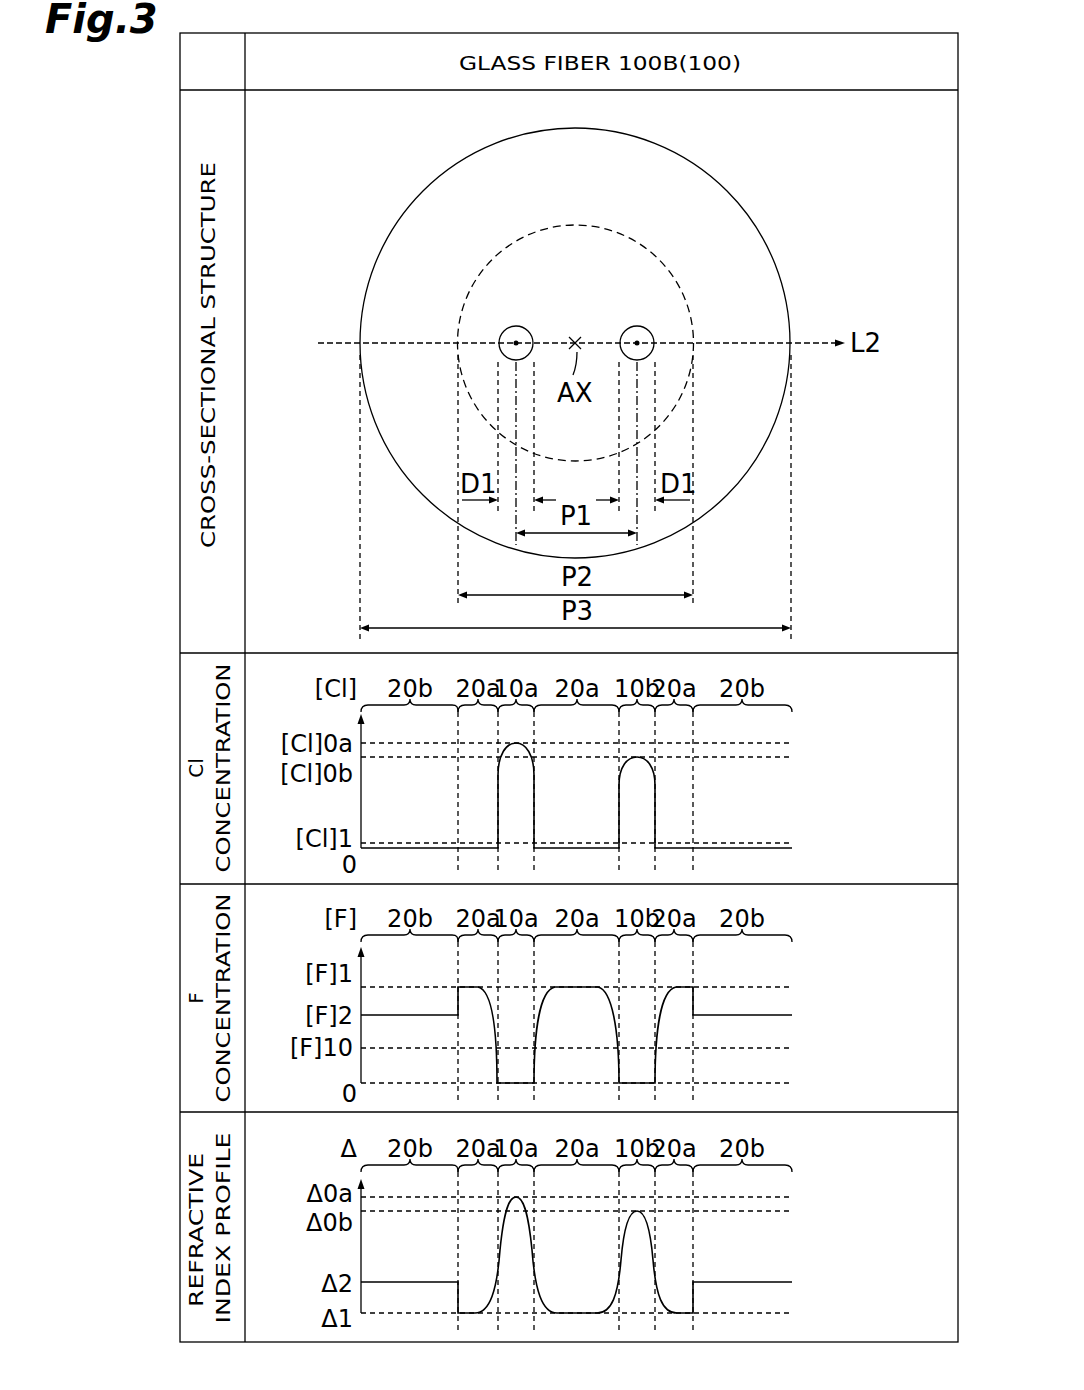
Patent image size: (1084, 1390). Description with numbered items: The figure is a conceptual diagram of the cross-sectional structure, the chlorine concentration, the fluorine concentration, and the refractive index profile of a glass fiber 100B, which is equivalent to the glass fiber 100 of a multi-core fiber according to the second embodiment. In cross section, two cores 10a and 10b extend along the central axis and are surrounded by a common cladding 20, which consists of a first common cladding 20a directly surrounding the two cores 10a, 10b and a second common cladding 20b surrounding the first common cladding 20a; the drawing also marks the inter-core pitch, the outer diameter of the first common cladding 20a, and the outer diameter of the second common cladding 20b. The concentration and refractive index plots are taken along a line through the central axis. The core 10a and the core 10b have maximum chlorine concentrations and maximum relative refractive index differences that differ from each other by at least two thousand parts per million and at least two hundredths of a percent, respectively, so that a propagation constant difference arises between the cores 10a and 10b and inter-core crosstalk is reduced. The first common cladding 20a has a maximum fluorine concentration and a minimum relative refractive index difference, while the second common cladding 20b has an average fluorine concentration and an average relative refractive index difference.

The glass fiber 100 is at (805, 147).
The glass fiber 100B is at (640, 343).
The core 10a is at (527, 331).
The core 10b is at (648, 331).
The common cladding 20 is at (868, 395).
The first common cladding 20a is at (668, 391).
The second common cladding 20b is at (728, 461).